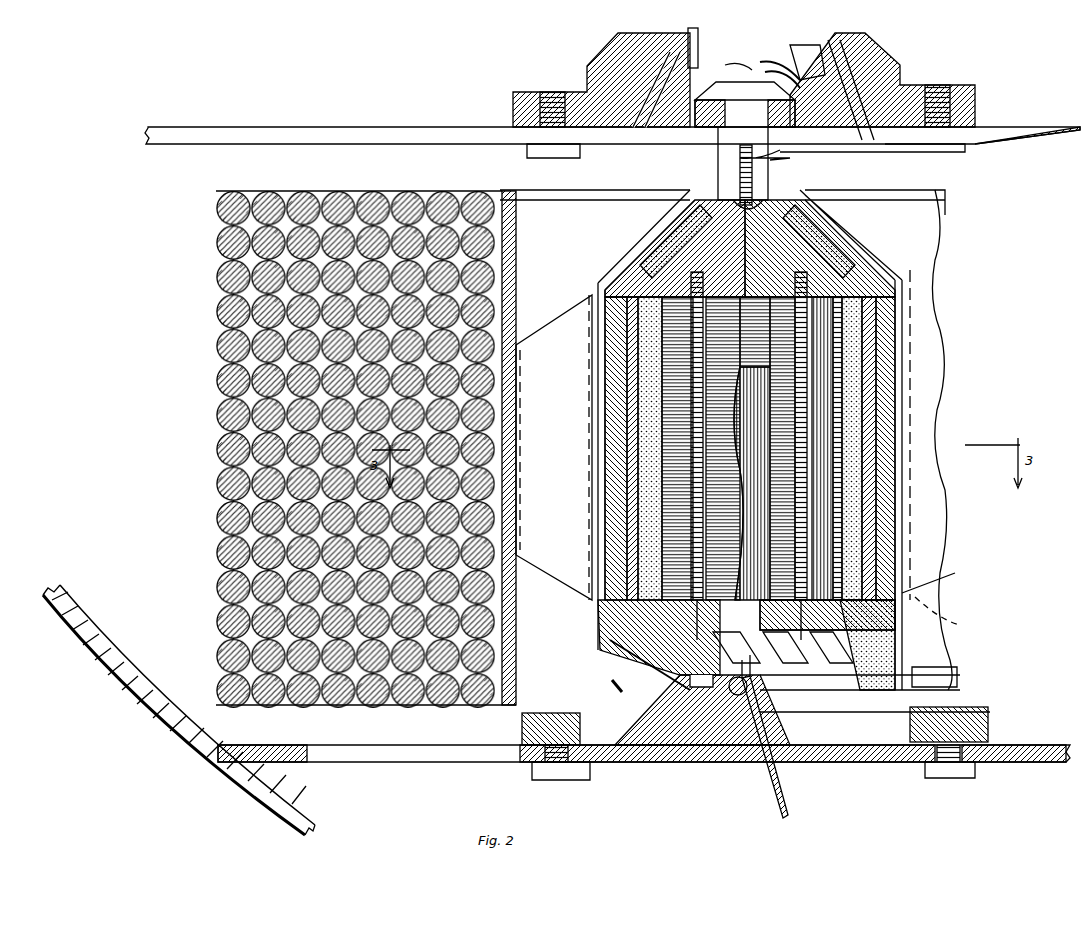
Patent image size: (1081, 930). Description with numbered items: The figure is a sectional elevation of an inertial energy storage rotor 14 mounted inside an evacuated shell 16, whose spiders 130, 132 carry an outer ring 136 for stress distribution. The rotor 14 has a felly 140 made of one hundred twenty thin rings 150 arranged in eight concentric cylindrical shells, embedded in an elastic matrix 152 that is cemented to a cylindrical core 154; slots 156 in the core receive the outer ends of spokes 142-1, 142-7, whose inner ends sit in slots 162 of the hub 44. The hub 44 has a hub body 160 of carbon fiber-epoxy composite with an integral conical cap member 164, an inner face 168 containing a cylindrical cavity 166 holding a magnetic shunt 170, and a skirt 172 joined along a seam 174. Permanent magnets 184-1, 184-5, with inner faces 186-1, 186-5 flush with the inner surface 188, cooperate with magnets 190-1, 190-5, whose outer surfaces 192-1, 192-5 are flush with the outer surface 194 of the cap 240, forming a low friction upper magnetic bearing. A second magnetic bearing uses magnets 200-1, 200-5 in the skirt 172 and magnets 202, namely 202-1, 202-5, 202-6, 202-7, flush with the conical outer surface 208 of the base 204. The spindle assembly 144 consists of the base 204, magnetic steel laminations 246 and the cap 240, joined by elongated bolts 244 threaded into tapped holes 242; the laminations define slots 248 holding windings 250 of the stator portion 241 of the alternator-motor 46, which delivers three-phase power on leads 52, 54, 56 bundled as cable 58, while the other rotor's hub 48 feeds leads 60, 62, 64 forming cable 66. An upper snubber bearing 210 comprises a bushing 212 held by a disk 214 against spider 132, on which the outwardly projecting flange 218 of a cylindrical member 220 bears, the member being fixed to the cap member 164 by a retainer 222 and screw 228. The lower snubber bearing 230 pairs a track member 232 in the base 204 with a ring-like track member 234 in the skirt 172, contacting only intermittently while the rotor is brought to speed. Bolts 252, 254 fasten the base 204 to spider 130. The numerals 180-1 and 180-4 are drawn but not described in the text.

The rotor 14 is at (208, 354).
The shell 16 is at (158, 720).
The hub 44 is at (512, 705).
The alternator-motor 46 is at (930, 595).
The hub 48 is at (580, 44).
The lead 52 is at (732, 694).
The lead 54 is at (748, 705).
The lead 56 is at (758, 718).
The cable 58 is at (782, 815).
The lead 60 is at (735, 62).
The lead 62 is at (770, 60).
The lead 64 is at (800, 45).
The cable 66 is at (832, 40).
The spider 130 is at (336, 762).
The spider 132 is at (325, 130).
The outer ring 136 is at (288, 750).
The felly 140 is at (392, 385).
The spoke 142-1 is at (573, 337).
The spoke 142-7 is at (956, 328).
The spindle assembly 144 is at (760, 752).
The rings 150 is at (335, 715).
The matrix 152 is at (235, 495).
The cylindrical core 154 is at (519, 605).
The slots 156 is at (518, 525).
The hub body 160 is at (597, 603).
The slots 162 is at (598, 292).
The conical cap member 164 is at (810, 185).
The cylindrical cavity 166 is at (885, 395).
The inner face 168 is at (690, 297).
The magnetic shunt 170 is at (868, 382).
The skirt 172 is at (910, 640).
The seam 174 is at (952, 611).
The side wall layer 180-1 is at (618, 422).
The side wall layer 180-4 is at (885, 410).
The permanent magnet 184-1 is at (658, 222).
The permanent magnet 184-5 is at (838, 220).
The inner face 186-1 is at (720, 205).
The inner face 186-5 is at (809, 197).
The inner surface 188 is at (648, 257).
The permanent magnet 190-1 is at (712, 265).
The permanent magnet 190-5 is at (805, 278).
The outer surface 192-1 is at (715, 238).
The outer surface 192-5 is at (790, 252).
The outer surface 194 is at (768, 200).
The permanent magnet 200-1 is at (659, 645).
The permanent magnet 200-5 is at (875, 645).
The permanent magnets 202 is at (875, 656).
The permanent magnet 202-1 is at (640, 677).
The permanent magnet 202-5 is at (840, 665).
The permanent magnet 202-6 is at (795, 665).
The permanent magnet 202-7 is at (750, 660).
The base 204 is at (672, 748).
The conical outer surface 208 is at (845, 608).
The upper snubber bearing 210 is at (895, 70).
The bushing 212 is at (790, 108).
The disk 214 is at (820, 150).
The outwardly projecting flange 218 is at (700, 92).
The cylindrical member 220 is at (700, 110).
The retainer 222 is at (690, 30).
The screw 228 is at (740, 172).
The lower snubber bearing 230 is at (622, 684).
The track member 232 is at (606, 690).
The track member 234 is at (600, 692).
The cap 240 is at (762, 296).
The stator portion 241 is at (805, 427).
The tapped holes 242 is at (749, 456).
The elongated bolts 244 is at (718, 355).
The magnetic steel laminations 246 is at (668, 458).
The slots 248 is at (728, 420).
The windings 250 is at (812, 455).
The bolt 252 is at (556, 766).
The bolt 254 is at (945, 772).